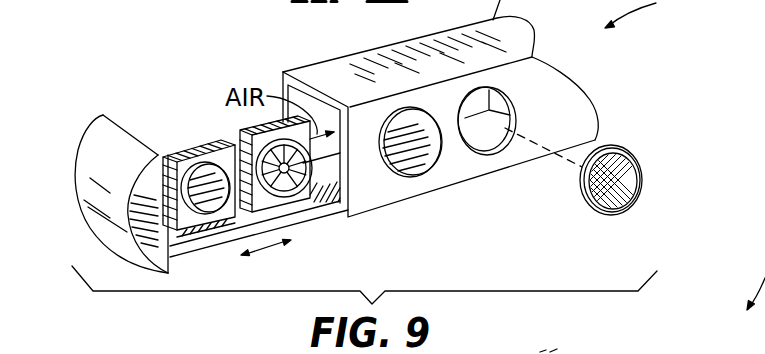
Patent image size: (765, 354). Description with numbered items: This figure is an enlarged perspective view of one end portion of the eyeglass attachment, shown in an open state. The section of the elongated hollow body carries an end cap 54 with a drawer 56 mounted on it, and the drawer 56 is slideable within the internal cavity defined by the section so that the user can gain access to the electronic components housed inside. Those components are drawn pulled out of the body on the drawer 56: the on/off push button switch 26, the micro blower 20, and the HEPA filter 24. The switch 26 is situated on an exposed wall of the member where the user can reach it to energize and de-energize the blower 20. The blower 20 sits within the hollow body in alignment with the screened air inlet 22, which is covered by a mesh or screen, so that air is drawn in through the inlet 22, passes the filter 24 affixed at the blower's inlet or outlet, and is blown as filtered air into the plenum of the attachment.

The micro blower 20 is at (307, 192).
The air inlet 22 is at (492, 153).
The HEPA filter 24 is at (242, 126).
The on/off push button switch 26 is at (191, 173).
The end cap 54 is at (78, 145).
The drawer 56 is at (187, 253).